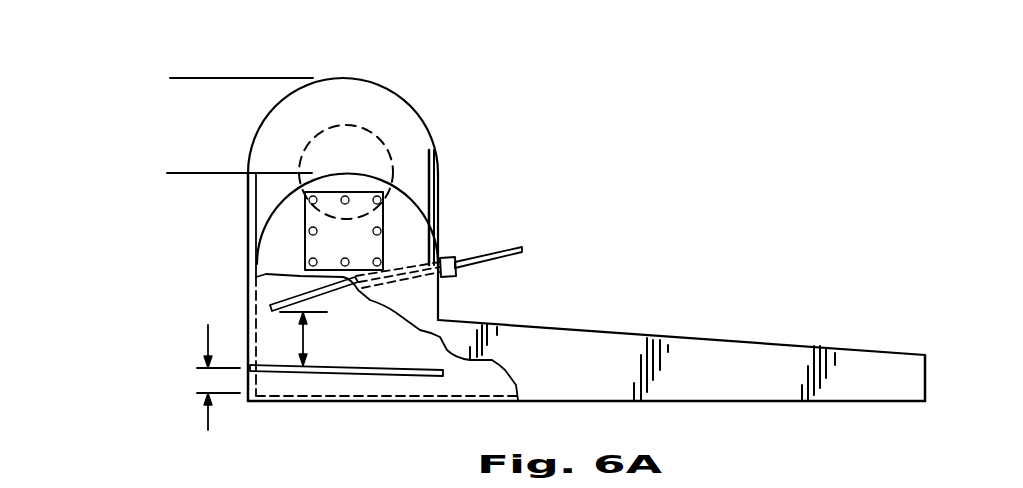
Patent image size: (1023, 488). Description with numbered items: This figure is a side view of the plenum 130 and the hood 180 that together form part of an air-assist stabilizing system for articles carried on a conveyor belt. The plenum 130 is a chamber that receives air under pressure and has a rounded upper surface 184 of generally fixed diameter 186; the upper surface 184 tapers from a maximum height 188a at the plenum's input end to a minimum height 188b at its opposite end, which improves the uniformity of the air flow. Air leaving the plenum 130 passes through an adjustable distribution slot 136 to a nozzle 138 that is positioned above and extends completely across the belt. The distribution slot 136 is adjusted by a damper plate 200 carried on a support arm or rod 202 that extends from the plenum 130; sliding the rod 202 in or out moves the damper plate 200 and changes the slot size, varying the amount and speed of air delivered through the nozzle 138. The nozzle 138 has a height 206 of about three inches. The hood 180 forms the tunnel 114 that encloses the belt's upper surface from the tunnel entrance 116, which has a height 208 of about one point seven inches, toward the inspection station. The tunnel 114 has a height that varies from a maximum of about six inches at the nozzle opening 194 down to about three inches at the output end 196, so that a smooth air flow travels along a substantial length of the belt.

The maximum height 188a is at (227, 78).
The minimum height 188b is at (215, 173).
The rounded upper surface 184 is at (347, 78).
The plenum 130 is at (430, 185).
The adjustable distribution slot 136 is at (250, 302).
The tunnel entrance 116 is at (275, 380).
The fixed diameter 186 is at (385, 193).
The nozzle opening 194 is at (478, 378).
The damper plate 200 is at (268, 306).
The support arm or rod 202 is at (492, 252).
The nozzle height 206 is at (307, 356).
The nozzle 138 is at (389, 348).
The tunnel entrance height 208 is at (203, 378).
The hood 180 is at (692, 335).
The tunnel 114 is at (710, 375).
The output end 196 is at (925, 377).